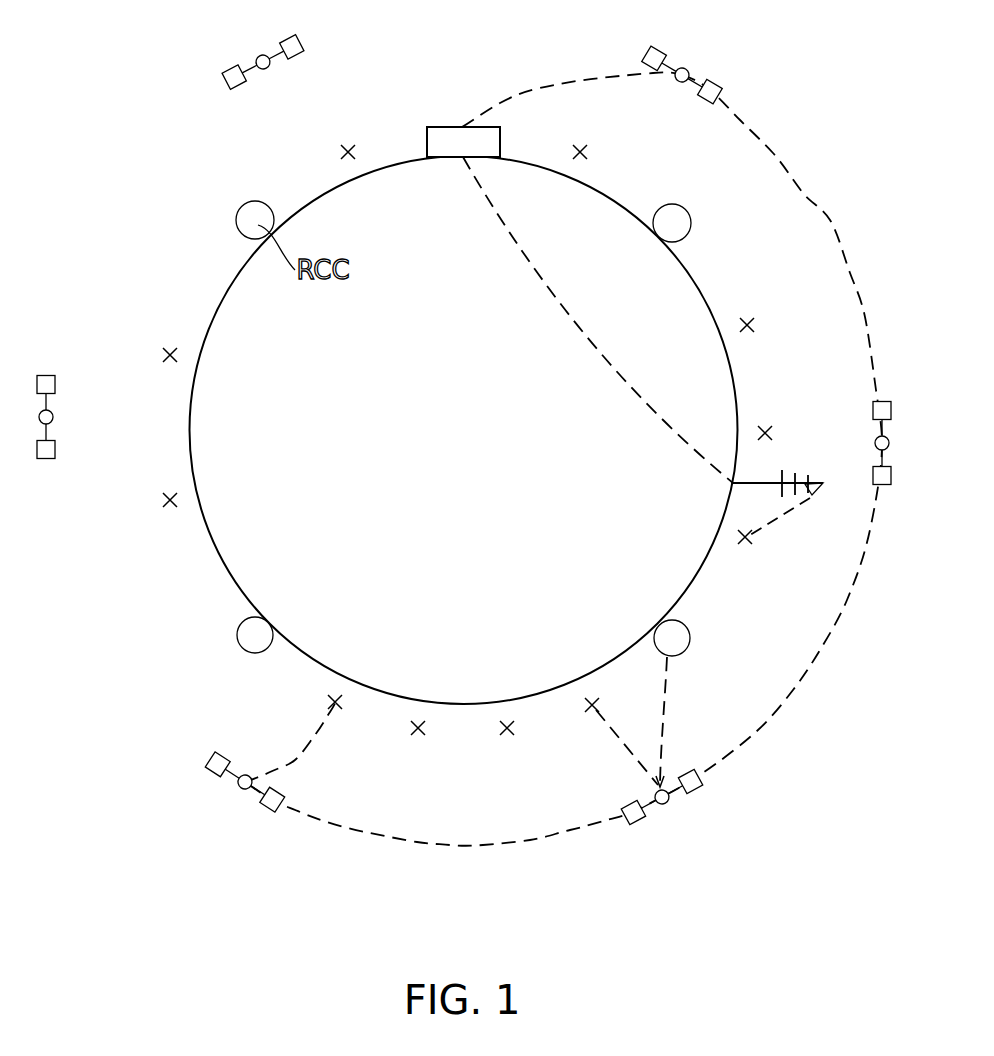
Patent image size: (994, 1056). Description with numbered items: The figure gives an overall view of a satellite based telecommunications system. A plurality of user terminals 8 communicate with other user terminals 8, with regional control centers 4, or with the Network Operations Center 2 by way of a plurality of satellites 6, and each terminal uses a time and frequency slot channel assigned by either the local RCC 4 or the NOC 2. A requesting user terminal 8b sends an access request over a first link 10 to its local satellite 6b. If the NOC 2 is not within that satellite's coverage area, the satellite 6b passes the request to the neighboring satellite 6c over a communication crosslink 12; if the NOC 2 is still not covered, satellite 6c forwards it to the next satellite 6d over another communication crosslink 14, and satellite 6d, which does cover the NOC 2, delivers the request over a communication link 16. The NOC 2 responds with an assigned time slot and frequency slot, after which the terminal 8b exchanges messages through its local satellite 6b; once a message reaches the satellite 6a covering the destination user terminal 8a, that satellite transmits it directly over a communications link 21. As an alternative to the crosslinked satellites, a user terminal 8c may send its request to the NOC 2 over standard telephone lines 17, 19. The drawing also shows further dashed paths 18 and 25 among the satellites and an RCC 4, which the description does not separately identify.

The Network Operations Center (NOC) 2 is at (450, 127).
The regional control center (RCC) 4 is at (245, 207).
The satellite 6 is at (303, 45).
The satellite 6a is at (212, 776).
The local satellite 6b is at (693, 792).
The neighboring satellite 6c is at (875, 443).
The satellite 6d is at (717, 84).
The user terminal 8 is at (507, 737).
The destination user terminal 8a is at (342, 693).
The user terminal 8b is at (592, 700).
The user terminal 8c is at (748, 541).
The first link 10 is at (638, 743).
The communication crosslink 12 is at (793, 697).
The communication crosslink 14 is at (830, 222).
The communication link 16 is at (545, 84).
The standard telephone line 17 is at (778, 518).
The communication link 18 is at (420, 843).
The standard telephone line 19 is at (588, 338).
The communications link 21 is at (300, 760).
The communication link 25 is at (662, 735).